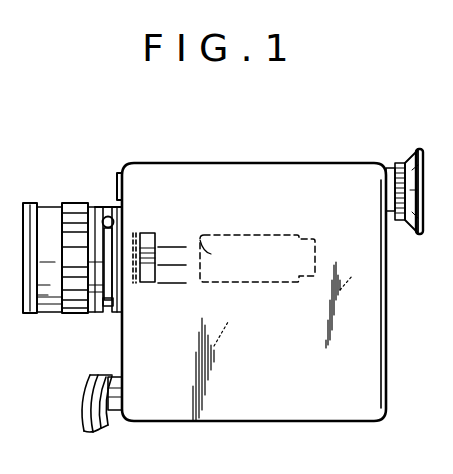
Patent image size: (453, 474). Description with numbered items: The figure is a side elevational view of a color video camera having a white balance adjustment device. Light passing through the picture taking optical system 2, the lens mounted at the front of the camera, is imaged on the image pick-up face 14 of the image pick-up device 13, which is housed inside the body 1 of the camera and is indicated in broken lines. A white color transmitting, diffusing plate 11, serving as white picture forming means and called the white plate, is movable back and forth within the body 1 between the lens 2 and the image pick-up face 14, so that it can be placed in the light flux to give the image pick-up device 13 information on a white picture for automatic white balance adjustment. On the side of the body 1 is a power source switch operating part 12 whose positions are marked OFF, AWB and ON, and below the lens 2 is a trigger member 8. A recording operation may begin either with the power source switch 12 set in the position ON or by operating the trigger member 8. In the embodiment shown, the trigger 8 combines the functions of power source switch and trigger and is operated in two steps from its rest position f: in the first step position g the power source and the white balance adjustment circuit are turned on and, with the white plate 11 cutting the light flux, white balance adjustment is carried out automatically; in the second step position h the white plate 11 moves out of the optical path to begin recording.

The body 1 is at (322, 178).
The picture taking optical system 2 is at (52, 228).
The trigger member 8 is at (92, 433).
The white color transmitting, diffusing plate 11 is at (133, 232).
The power source switch operating part 12 is at (150, 240).
The image pick-up device 13 is at (253, 247).
The image pick-up face 14 is at (203, 247).
The lever position f is at (86, 392).
The first step position g is at (99, 378).
The second step position h is at (112, 378).